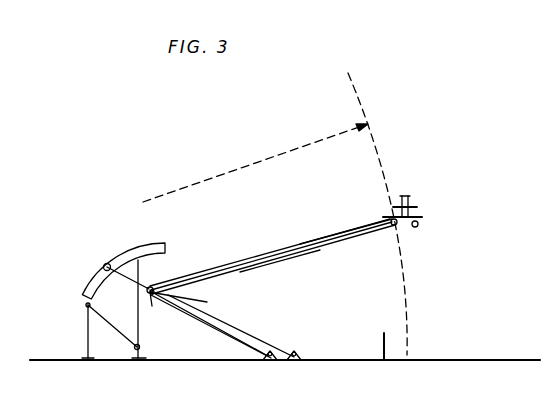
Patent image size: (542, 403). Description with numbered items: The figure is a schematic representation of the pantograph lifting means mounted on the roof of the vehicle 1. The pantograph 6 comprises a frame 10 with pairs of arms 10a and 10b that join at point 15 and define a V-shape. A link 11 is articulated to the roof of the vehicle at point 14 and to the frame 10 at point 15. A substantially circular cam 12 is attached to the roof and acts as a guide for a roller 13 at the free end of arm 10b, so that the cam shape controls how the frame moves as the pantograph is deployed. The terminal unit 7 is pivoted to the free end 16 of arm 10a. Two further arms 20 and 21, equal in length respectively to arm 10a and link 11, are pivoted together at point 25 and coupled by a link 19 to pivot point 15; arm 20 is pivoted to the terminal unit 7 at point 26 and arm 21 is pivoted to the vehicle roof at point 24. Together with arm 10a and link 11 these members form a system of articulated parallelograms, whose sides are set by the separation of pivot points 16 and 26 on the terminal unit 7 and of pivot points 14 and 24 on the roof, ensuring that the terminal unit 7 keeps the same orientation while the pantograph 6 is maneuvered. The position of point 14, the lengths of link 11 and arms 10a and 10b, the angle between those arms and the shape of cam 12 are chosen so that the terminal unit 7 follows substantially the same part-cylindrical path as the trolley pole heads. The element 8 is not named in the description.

The vehicle 1 is at (433, 358).
The pantograph 6 is at (141, 218).
The terminal unit 7 is at (417, 208).
The stop post 8 is at (387, 338).
The frame 10 is at (193, 267).
The arm 10a is at (327, 226).
The arm 10b is at (150, 288).
The link 11 is at (212, 326).
The cam 12 is at (89, 279).
The roller 13 is at (106, 263).
The point 14 is at (267, 362).
The point 15 is at (151, 300).
The free end 16 is at (392, 226).
The link 19 is at (207, 302).
The arm 20 is at (296, 261).
The arm 21 is at (263, 339).
The pivot point 24 is at (298, 355).
The point 25 is at (158, 291).
The pivot point 26 is at (419, 225).